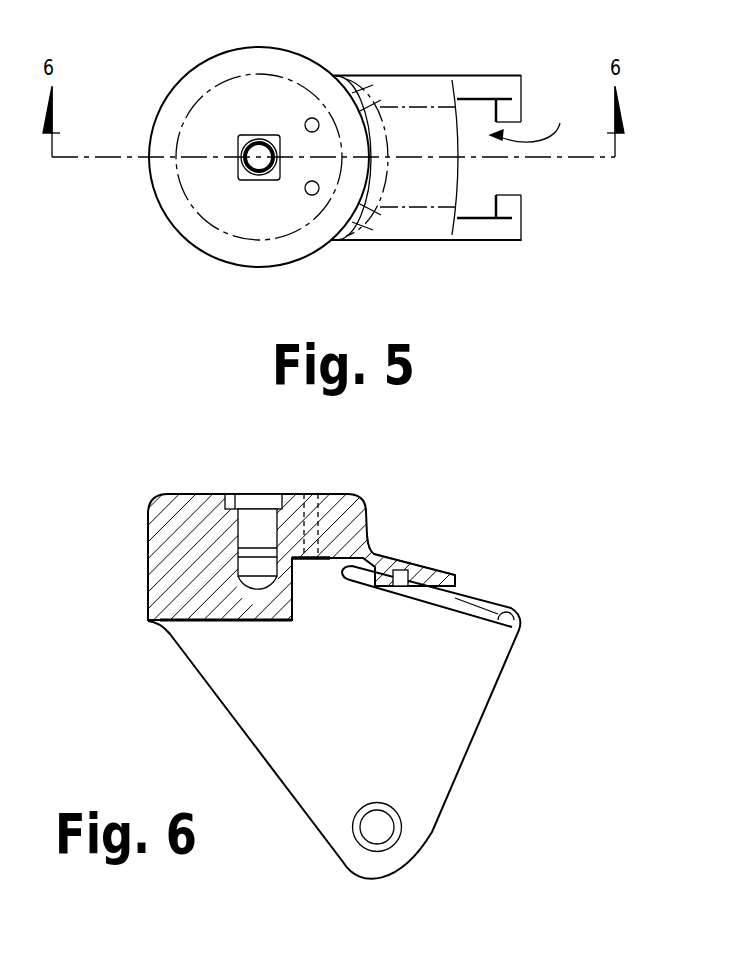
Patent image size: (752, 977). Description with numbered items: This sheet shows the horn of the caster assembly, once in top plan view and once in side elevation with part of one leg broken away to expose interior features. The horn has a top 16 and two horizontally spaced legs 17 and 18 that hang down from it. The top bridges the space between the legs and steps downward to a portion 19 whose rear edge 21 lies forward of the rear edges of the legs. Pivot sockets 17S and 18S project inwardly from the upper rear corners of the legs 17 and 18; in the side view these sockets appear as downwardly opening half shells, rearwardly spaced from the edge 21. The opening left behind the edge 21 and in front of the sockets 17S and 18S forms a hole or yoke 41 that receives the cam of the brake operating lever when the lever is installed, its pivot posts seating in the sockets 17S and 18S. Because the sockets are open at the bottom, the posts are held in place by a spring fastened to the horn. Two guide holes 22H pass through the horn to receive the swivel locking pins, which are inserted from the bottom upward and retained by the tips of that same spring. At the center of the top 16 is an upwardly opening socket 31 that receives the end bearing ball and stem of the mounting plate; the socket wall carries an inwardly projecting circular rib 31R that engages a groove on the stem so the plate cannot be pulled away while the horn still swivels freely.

In FIG. 6, the top 16 is at (190, 493).
In FIG. 5, the leg 17 is at (428, 242).
In FIG. 6, the leg 17 is at (296, 781).
In FIG. 5, the pivot socket 17S is at (508, 203).
In FIG. 5, the leg 18 is at (336, 72).
In FIG. 6, the leg 18 is at (327, 678).
In FIG. 5, the pivot socket 18S is at (512, 114).
In FIG. 6, the pivot socket 18S is at (521, 619).
In FIG. 5, the stepped-down portion 19 is at (380, 108).
In FIG. 6, the stepped-down portion 19 is at (437, 567).
In FIG. 5, the rear edge 21 is at (460, 198).
In FIG. 6, the rear edge 21 is at (470, 587).
In FIG. 5, the guide holes 22H is at (308, 120).
In FIG. 5, the socket 31 is at (238, 160).
In FIG. 6, the socket 31 is at (262, 512).
In FIG. 6, the circular rib 31R is at (243, 548).
In FIG. 5, the yoke 41 is at (530, 119).